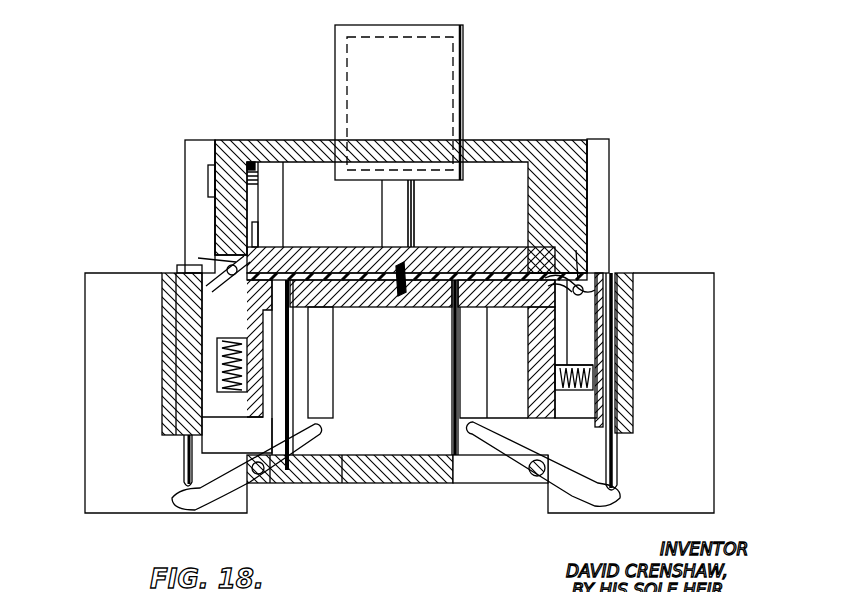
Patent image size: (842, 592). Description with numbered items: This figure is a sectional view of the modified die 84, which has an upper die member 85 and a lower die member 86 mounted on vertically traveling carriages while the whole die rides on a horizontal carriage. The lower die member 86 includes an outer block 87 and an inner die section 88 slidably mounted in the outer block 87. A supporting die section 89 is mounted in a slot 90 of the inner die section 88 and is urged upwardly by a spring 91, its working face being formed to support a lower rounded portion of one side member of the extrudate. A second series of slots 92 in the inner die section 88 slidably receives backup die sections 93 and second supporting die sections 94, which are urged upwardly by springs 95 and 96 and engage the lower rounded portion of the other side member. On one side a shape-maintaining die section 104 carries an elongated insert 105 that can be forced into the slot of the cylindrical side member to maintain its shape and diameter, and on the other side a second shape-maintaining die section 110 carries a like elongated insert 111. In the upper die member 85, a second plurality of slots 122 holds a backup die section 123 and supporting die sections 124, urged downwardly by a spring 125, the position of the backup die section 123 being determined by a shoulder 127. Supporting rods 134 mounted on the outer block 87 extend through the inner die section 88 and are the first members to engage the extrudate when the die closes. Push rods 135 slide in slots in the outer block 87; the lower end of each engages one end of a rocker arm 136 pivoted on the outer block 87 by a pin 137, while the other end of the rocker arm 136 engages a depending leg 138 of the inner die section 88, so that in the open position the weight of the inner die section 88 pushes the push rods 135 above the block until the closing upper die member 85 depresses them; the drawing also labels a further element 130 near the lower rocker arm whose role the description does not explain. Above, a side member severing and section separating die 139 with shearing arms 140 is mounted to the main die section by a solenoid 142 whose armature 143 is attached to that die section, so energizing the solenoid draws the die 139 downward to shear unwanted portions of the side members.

The die 84 is at (533, 101).
The upper die member 85 is at (592, 139).
The lower die member 86 is at (648, 277).
The outer block 87 is at (402, 470).
The inner die section 88 is at (389, 312).
The supporting die sections 89 is at (227, 320).
The slots 90 is at (255, 368).
The spring 91 is at (246, 362).
The second series of slots 92 is at (575, 390).
The backup die sections 93 is at (545, 340).
The second supporting die sections 94 is at (582, 343).
The spring 95 is at (555, 378).
The spring 96 is at (593, 380).
The shape-maintaining die sections 104 is at (212, 275).
The elongated inserts 105 is at (215, 252).
The second shape-maintaining die sections 110 is at (590, 275).
The elongated inserts 111 is at (585, 268).
The second plurality of slots 122 is at (258, 176).
The backup die section 123 is at (255, 212).
The supporting die sections 124 is at (208, 202).
The spring 125 is at (255, 185).
The shoulder 127 is at (258, 240).
The lever 130 is at (518, 458).
The supporting rods 134 is at (278, 407).
The push rods 135 is at (180, 462).
The rocker arm 136 is at (218, 492).
The pin 137 is at (285, 485).
The depending leg 138 is at (322, 418).
The side member severing and section separating dies 139 is at (530, 140).
The shearing arms 140 is at (233, 185).
The solenoid 142 is at (399, 102).
The armature 143 is at (415, 208).